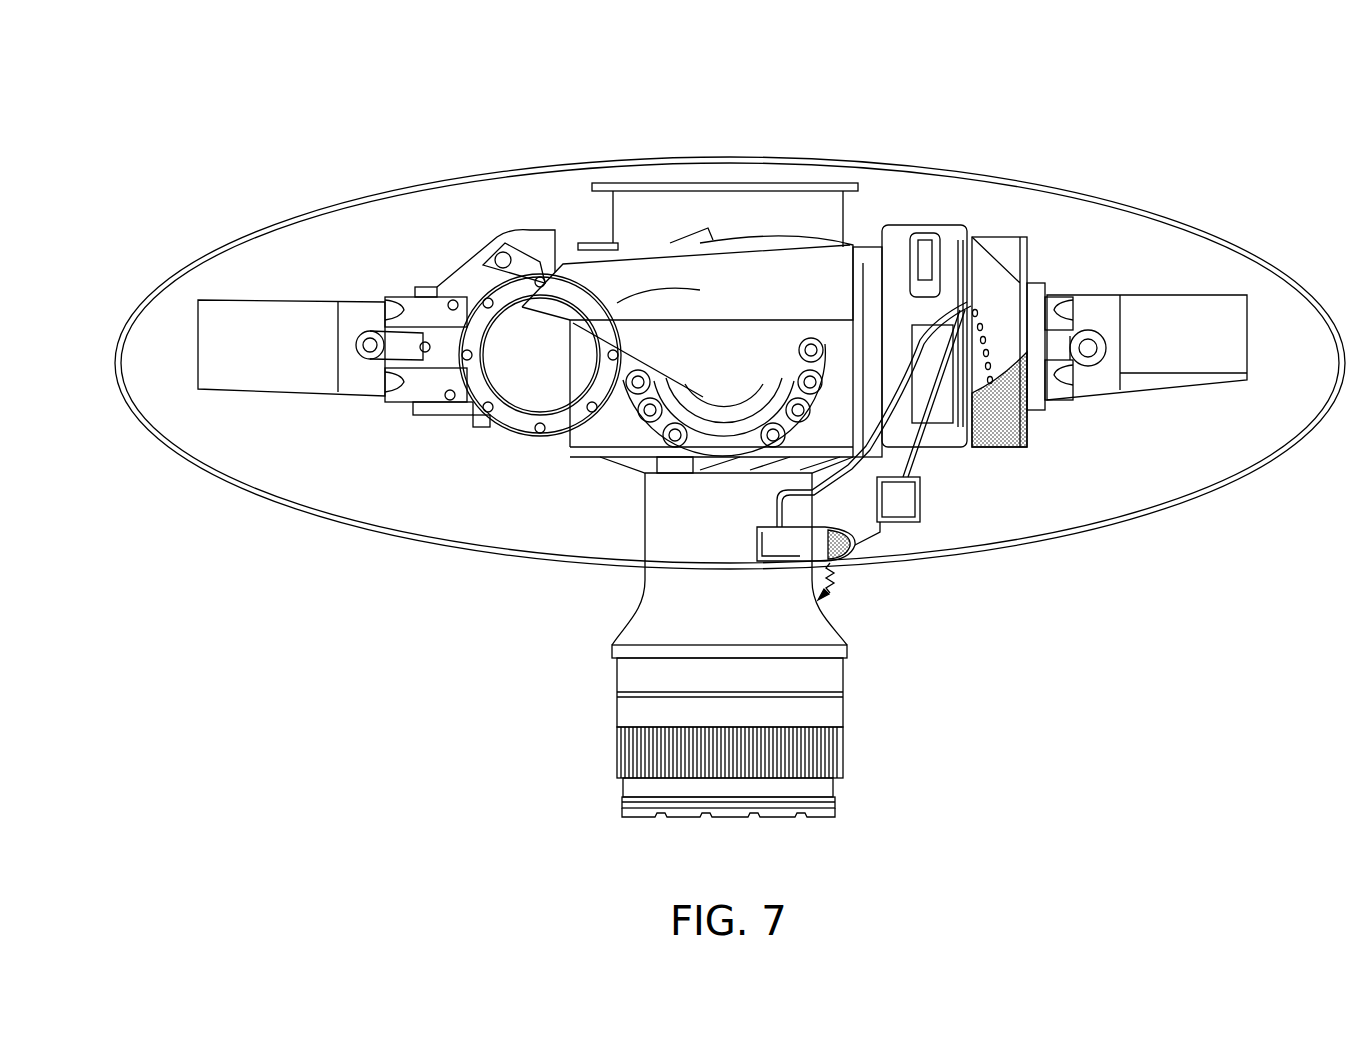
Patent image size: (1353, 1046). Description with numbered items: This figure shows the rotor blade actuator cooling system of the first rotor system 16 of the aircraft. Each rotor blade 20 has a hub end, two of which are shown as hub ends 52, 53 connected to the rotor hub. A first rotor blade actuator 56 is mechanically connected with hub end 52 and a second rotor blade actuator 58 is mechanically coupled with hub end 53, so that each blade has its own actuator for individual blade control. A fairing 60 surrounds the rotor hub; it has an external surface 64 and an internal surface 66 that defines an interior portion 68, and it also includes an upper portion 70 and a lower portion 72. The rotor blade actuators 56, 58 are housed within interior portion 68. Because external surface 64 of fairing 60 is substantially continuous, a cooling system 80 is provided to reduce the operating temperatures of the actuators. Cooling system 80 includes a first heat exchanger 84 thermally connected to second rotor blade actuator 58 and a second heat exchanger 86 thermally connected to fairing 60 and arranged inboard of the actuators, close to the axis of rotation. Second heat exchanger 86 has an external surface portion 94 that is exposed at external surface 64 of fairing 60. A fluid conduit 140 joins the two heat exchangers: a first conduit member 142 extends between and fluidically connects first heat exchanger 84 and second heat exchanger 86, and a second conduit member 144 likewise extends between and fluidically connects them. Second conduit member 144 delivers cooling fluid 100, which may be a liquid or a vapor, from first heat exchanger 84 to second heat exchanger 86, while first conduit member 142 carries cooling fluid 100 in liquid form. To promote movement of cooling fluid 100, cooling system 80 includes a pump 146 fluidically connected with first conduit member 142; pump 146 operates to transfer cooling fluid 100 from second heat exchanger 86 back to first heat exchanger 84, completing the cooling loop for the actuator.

The first rotor system 16 is at (698, 440).
The rotor blade 20 is at (1177, 382).
The hub end 52 is at (383, 370).
The hub end 53 is at (1060, 380).
The first rotor blade actuator 56 is at (473, 430).
The second rotor blade actuator 58 is at (1062, 455).
The fairing 60 is at (698, 363).
The external surface 64 is at (704, 363).
The internal surface 66 is at (123, 353).
The interior portion 68 is at (163, 392).
The upper portion 70 is at (255, 182).
The lower portion 72 is at (363, 540).
The cooling system 80 is at (1053, 379).
The first heat exchanger 84 is at (1001, 232).
The second heat exchanger 86 is at (743, 545).
The external surface portion 94 is at (828, 563).
The cooling fluid 100 is at (993, 397).
The fluid conduit 140 is at (993, 383).
The first conduit member 142 is at (947, 477).
The second conduit member 144 is at (848, 490).
The pump 146 is at (898, 527).